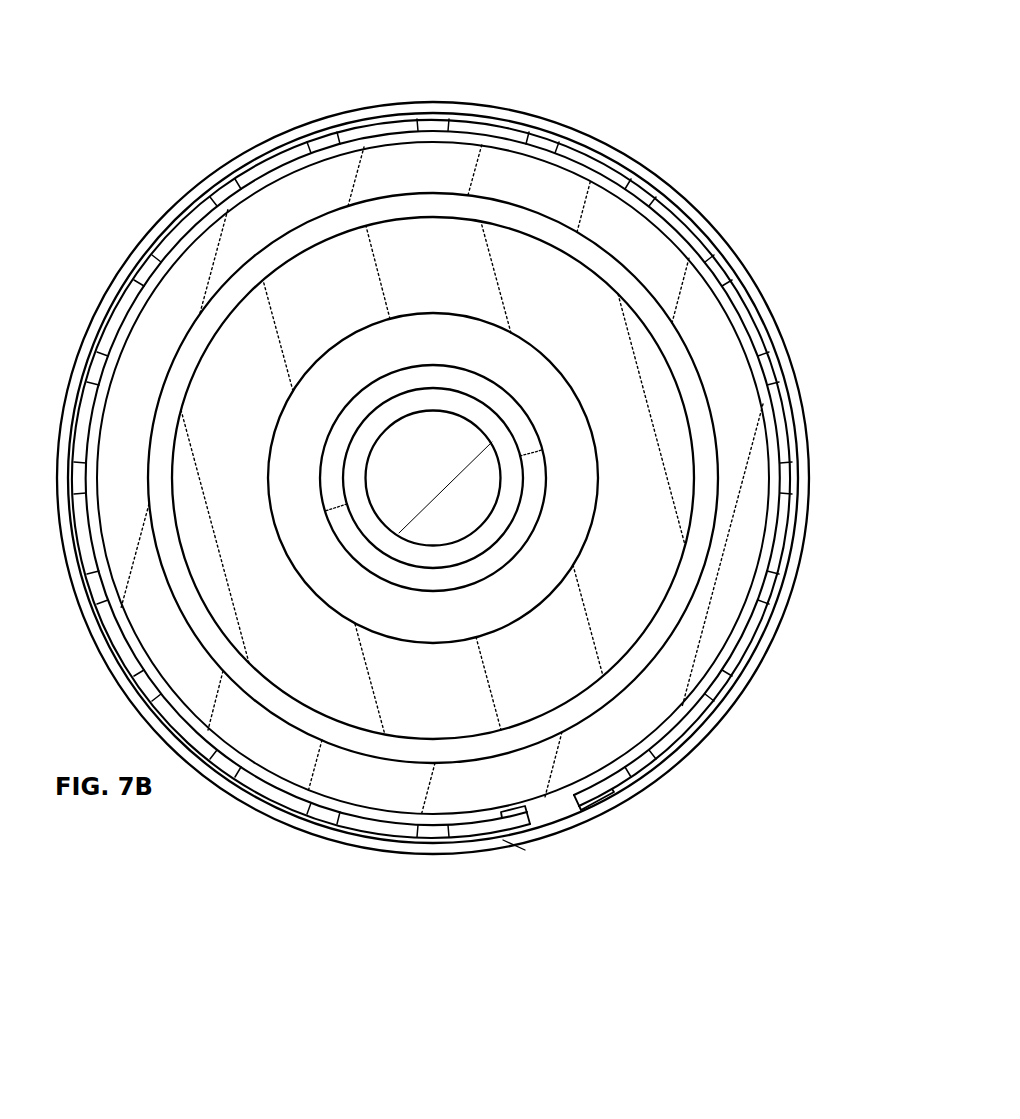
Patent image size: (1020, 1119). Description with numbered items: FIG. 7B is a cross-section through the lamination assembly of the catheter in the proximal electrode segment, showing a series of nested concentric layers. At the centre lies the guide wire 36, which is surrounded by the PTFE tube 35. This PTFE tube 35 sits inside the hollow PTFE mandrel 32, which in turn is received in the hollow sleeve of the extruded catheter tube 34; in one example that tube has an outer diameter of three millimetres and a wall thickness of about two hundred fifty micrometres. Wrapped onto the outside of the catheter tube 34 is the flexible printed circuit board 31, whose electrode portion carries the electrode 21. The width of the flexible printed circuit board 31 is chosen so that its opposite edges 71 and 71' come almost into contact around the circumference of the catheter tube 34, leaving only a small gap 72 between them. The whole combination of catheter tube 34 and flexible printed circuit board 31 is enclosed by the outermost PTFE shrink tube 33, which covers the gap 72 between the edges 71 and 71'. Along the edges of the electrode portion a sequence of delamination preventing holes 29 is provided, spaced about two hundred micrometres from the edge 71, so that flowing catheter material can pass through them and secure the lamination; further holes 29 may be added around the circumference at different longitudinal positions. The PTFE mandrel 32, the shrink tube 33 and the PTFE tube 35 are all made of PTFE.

The electrode 21 is at (218, 183).
The holes 29 is at (647, 762).
The flexible printed circuit board 31 is at (490, 128).
The PTFE mandrel 32 is at (374, 478).
The PTFE shrink tube 33 is at (433, 442).
The catheter tube 34 is at (733, 530).
The PTFE tube 35 is at (503, 410).
The guide wire 36 is at (352, 660).
The edge 71 is at (511, 908).
The edge 71' is at (608, 873).
The gap 72 is at (553, 811).